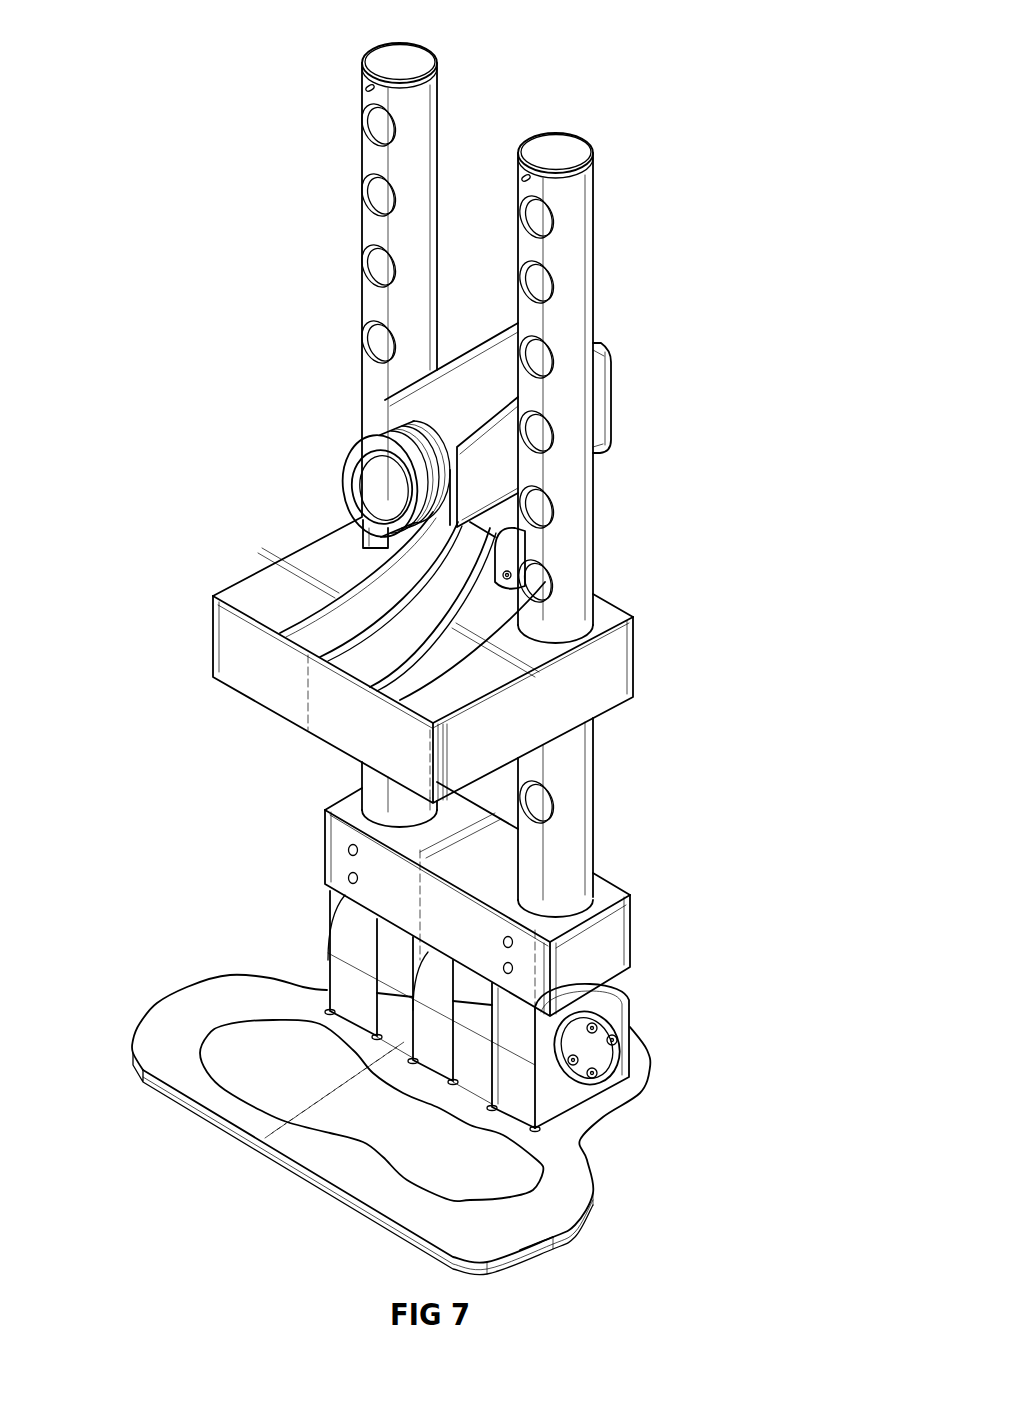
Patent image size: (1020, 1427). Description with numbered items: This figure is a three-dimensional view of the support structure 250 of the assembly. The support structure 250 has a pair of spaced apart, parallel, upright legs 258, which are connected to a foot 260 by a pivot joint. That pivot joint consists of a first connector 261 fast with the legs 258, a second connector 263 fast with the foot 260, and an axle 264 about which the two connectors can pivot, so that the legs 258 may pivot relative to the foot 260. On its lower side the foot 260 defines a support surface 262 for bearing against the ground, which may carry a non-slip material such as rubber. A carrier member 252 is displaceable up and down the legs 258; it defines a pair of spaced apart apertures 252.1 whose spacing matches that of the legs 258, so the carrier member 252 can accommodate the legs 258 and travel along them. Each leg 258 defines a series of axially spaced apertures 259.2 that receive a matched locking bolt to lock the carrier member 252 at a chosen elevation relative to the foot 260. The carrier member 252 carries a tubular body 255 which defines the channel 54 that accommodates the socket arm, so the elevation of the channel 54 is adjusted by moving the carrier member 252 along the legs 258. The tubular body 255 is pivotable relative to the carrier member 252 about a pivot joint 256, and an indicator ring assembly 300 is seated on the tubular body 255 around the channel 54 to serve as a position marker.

The support structure 250 is at (193, 169).
The legs 258 is at (543, 147).
The apertures 259.2 is at (553, 223).
The tubular body 255 is at (608, 400).
The indicator ring assembly 300 is at (386, 432).
The channel 54 is at (374, 482).
The apertures 252.1 is at (363, 537).
The pivot joint 256 is at (512, 558).
The carrier member 252 is at (620, 650).
The first connector 261 is at (616, 939).
The foot 260 is at (197, 1002).
The axle 264 is at (607, 1027).
The second connector 263 is at (630, 1030).
The support surface 262 is at (556, 1242).